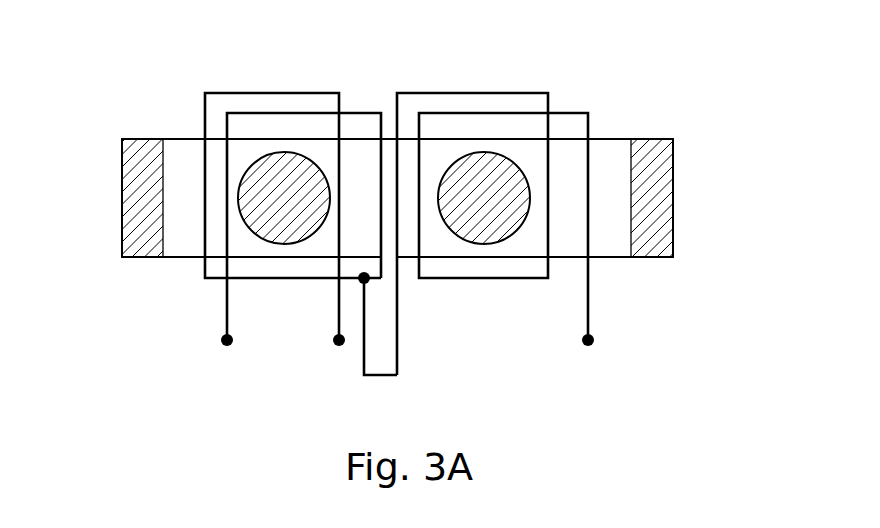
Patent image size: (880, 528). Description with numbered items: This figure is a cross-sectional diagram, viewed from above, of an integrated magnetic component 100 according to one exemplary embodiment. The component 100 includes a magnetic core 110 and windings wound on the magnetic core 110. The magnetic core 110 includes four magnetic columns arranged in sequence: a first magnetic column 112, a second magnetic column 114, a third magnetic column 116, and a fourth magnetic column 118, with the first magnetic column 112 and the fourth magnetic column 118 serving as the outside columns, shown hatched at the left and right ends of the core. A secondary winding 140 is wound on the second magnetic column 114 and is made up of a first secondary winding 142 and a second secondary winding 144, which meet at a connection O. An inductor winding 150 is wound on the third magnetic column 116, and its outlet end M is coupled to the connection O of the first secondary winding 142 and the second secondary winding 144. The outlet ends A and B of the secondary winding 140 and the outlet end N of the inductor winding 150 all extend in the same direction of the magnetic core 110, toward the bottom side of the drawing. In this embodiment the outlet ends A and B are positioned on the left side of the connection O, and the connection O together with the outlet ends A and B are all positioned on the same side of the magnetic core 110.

The integrated magnetic component 100 is at (101, 51).
The magnetic core 110 is at (679, 256).
The first magnetic column 112 is at (123, 196).
The second magnetic column 114 is at (279, 170).
The third magnetic column 116 is at (484, 170).
The fourth magnetic column 118 is at (660, 197).
The secondary winding 140 is at (212, 240).
The first secondary winding 142 is at (205, 243).
The second secondary winding 144 is at (227, 263).
The inductor winding 150 is at (551, 101).